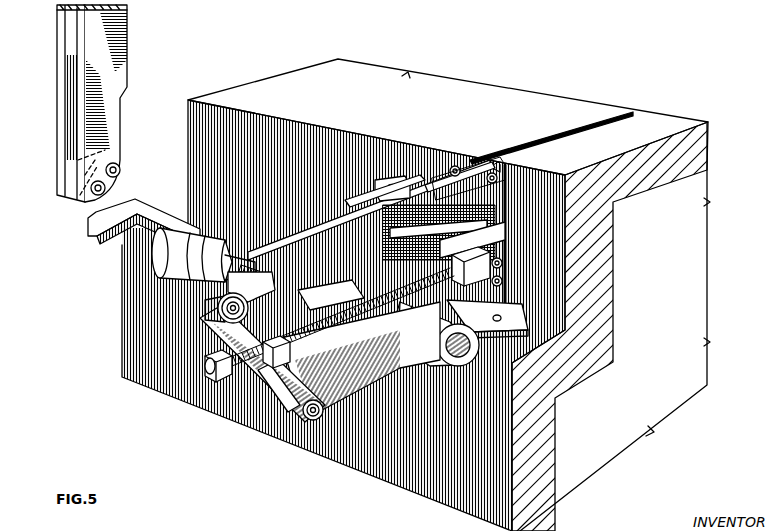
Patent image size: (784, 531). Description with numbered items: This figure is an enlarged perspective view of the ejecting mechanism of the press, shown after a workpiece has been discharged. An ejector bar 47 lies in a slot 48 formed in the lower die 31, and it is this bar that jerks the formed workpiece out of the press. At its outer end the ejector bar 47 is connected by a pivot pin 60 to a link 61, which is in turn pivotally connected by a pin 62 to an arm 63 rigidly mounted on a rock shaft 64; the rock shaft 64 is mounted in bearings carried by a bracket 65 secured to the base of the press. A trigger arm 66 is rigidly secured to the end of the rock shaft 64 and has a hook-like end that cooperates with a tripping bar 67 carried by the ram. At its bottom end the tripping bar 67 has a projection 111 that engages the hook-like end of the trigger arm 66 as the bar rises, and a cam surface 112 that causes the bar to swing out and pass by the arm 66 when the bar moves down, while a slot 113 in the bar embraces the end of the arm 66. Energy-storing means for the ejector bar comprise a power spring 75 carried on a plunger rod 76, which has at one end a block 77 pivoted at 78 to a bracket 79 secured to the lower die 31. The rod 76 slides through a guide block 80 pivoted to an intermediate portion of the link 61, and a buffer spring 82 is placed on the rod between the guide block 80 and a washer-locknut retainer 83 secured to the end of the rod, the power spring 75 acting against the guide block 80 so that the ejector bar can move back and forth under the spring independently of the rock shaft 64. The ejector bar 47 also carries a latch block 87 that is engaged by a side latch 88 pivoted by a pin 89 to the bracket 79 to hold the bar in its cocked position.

The lower die 31 is at (657, 118).
The slot 48 is at (636, 112).
The tripping bar 67 is at (122, 11).
The slot 113 is at (66, 62).
The projection 111 is at (105, 146).
The cam surface 112 is at (120, 173).
The trigger arm 66 is at (92, 232).
The bracket 65 is at (432, 332).
The ejector bar 47 is at (340, 260).
The pin 89 is at (388, 182).
The latch block 87 is at (352, 208).
The bracket 79 is at (427, 187).
The side latch 88 is at (428, 172).
The block 77 is at (510, 243).
The pivot 78 is at (510, 268).
The rock shaft 64 is at (545, 350).
The arm 63 is at (357, 374).
The spring 75 is at (338, 304).
The link 61 is at (253, 377).
The guide block 80 is at (277, 417).
The pivot pin 60 is at (240, 297).
The pin 62 is at (310, 420).
The plunger rod 76 is at (210, 370).
The buffer spring 82 is at (272, 358).
The washer-locknut retainer 83 is at (210, 352).